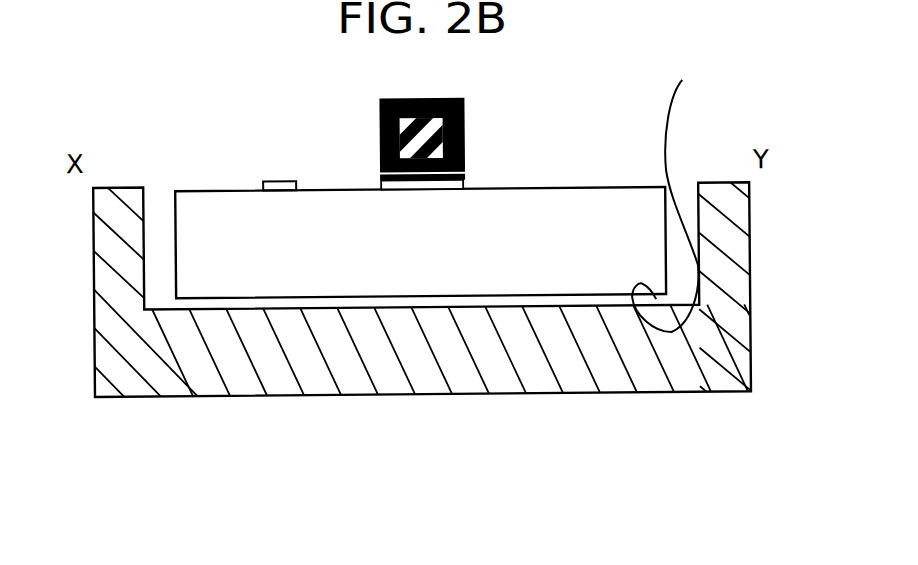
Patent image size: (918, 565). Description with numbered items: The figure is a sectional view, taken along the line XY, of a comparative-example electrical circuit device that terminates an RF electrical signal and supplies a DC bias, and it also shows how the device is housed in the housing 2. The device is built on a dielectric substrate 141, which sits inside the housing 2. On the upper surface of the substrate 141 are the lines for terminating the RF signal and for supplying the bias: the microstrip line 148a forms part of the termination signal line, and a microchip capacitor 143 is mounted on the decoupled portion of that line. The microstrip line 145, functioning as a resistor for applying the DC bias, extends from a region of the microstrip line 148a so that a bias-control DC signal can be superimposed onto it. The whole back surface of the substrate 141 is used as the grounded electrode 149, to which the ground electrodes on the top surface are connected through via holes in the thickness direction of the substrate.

The housing 2 is at (140, 332).
The dielectric substrate 141 is at (213, 208).
The microchip capacitor 143 is at (426, 101).
The microstrip line 145 is at (282, 183).
The microstrip line 148a is at (467, 188).
The grounded electrode 149 is at (668, 193).